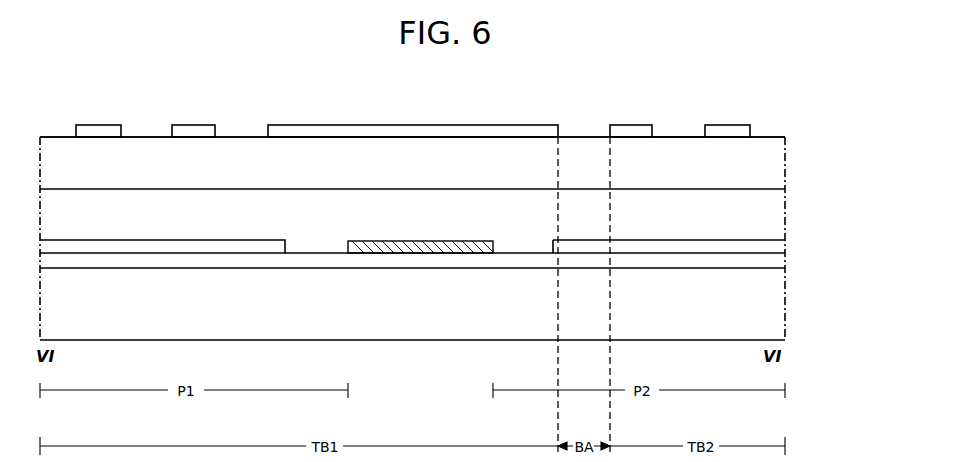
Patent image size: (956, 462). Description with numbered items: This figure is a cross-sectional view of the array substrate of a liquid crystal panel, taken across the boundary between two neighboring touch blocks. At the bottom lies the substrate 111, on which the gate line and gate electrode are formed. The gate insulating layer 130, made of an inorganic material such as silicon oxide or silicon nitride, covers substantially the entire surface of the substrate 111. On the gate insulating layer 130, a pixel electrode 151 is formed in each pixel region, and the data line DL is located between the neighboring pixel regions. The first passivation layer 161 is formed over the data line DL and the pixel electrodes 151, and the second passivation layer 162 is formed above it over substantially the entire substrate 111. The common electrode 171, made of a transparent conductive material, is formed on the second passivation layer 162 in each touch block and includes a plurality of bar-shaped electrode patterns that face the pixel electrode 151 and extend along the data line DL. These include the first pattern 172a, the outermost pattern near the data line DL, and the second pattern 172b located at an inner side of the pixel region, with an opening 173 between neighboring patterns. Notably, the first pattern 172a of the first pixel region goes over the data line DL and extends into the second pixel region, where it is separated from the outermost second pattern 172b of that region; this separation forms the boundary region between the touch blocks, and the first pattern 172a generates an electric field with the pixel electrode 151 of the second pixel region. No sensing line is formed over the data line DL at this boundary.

The substrate 111 is at (775, 312).
The gate insulating layer 130 is at (775, 261).
The pixel electrode 151 is at (134, 247).
The data line DL is at (412, 255).
The first passivation layer 161 is at (775, 227).
The second passivation layer 162 is at (775, 168).
The common electrode 171 is at (751, 128).
The first pattern 172a is at (432, 130).
The second pattern 172b is at (192, 130).
The opening 173 is at (685, 133).